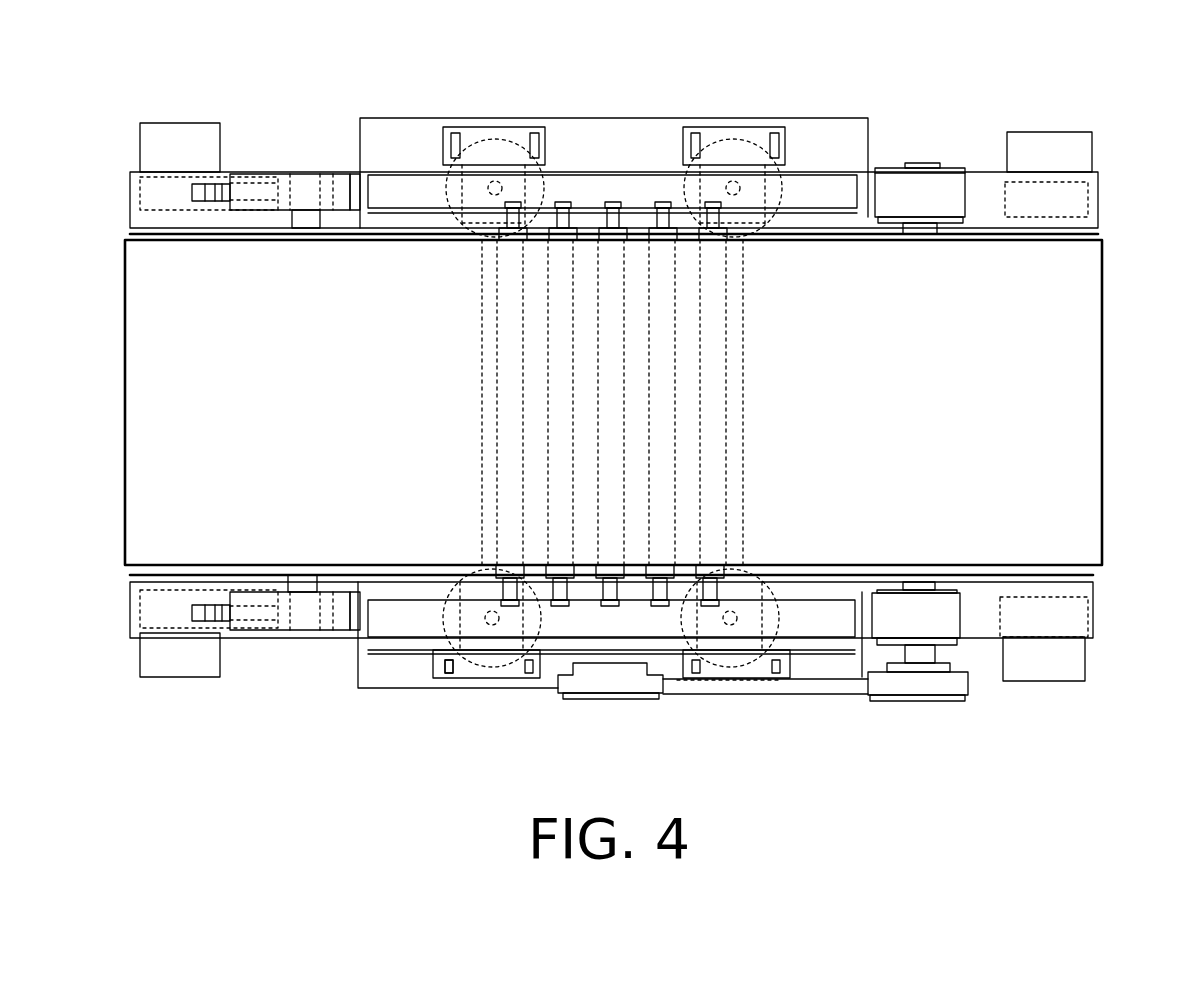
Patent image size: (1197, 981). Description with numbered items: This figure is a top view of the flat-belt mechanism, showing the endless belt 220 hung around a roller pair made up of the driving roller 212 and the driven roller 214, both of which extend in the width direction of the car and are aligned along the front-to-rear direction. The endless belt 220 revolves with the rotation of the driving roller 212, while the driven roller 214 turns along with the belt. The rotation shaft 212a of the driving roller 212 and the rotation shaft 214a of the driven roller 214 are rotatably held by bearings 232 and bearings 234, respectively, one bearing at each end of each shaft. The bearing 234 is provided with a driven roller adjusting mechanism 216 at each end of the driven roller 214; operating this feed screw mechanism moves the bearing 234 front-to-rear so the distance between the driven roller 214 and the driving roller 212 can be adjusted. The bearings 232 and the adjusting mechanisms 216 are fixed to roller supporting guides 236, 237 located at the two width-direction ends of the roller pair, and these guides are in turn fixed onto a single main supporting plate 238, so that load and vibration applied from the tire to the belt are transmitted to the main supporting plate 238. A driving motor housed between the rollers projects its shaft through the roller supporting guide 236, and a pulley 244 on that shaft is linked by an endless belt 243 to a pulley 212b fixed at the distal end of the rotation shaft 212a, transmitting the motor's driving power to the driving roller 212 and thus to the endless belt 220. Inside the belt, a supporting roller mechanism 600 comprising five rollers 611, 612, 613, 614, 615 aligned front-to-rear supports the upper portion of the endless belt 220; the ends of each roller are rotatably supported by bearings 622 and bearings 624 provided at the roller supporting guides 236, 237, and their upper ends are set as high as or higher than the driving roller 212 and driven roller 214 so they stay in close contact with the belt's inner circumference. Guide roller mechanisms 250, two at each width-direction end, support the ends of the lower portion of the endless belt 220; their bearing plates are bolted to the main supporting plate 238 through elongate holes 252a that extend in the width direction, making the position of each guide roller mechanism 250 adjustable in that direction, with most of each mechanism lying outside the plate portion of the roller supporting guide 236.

The driving roller 212 is at (1100, 570).
The rotation shaft 212a is at (940, 228).
The pulley 212b is at (942, 703).
The driven roller 214 is at (129, 233).
The rotation shaft 214a is at (287, 218).
The driven roller adjusting mechanism 216 is at (257, 172).
The endless belt 220 is at (1103, 400).
The bearing 232 is at (968, 192).
The bearing 234 is at (334, 188).
The roller supporting guide 236 is at (372, 615).
The roller supporting guide 237 is at (366, 189).
The main supporting plate 238 is at (398, 674).
The endless belt 243 is at (853, 688).
The pulley 244 is at (590, 701).
The guide roller mechanism 250 is at (510, 122).
The elongate hole 252a is at (454, 672).
The supporting roller mechanism 600 is at (633, 402).
The roller 611 is at (497, 331).
The roller 612 is at (548, 392).
The roller 613 is at (598, 452).
The roller 614 is at (677, 312).
The roller 615 is at (726, 378).
The bearing 622 is at (640, 604).
The bearing 624 is at (592, 207).